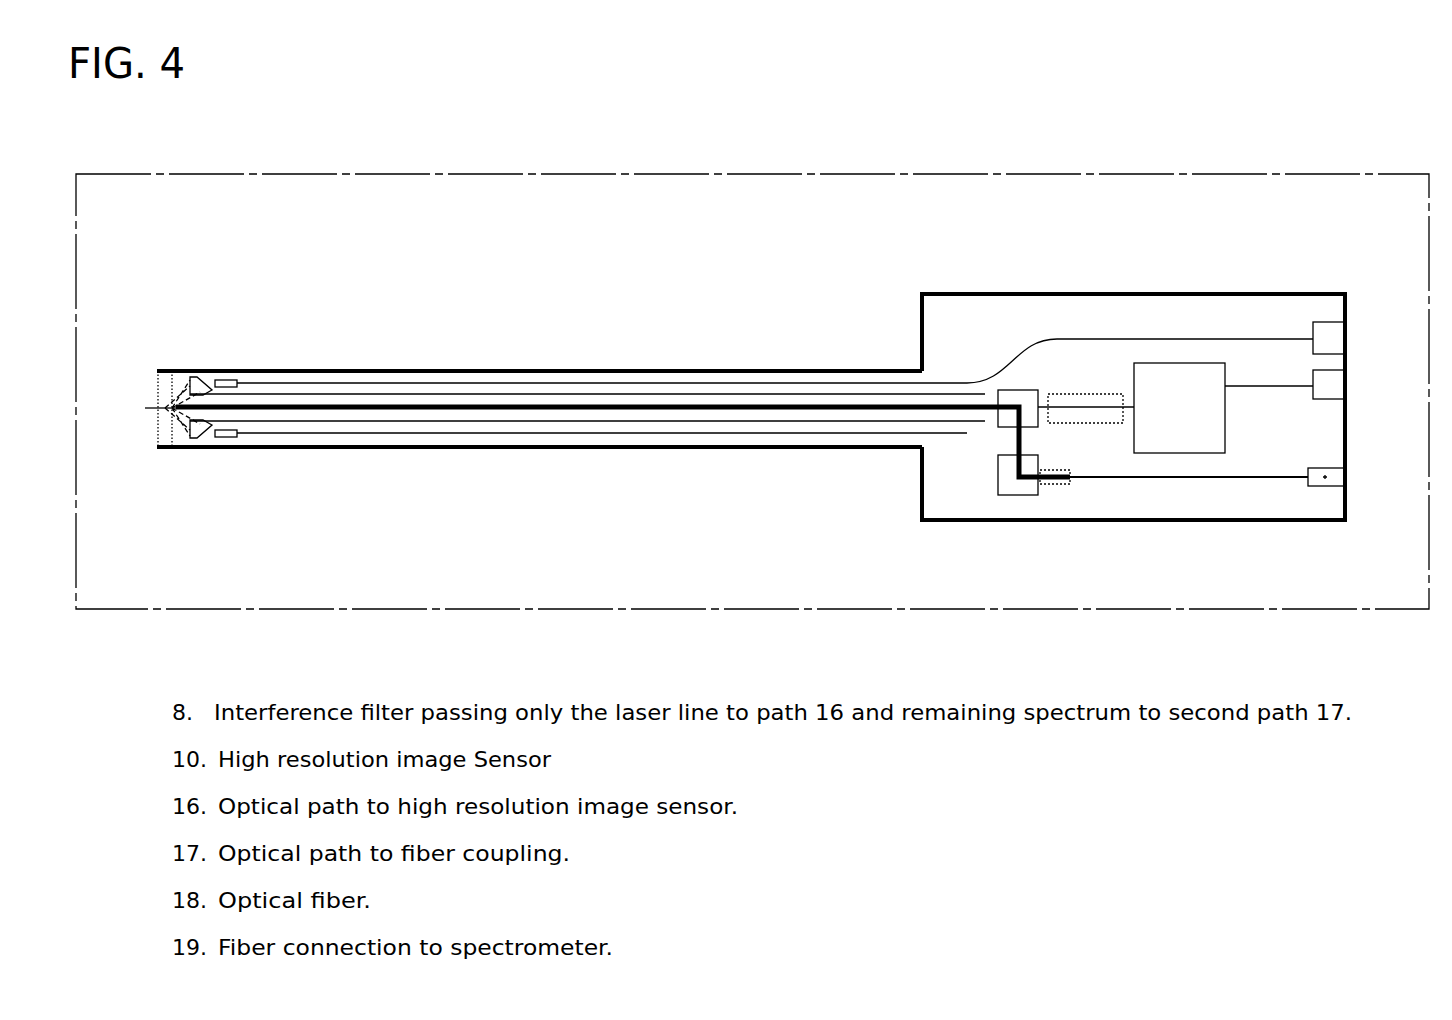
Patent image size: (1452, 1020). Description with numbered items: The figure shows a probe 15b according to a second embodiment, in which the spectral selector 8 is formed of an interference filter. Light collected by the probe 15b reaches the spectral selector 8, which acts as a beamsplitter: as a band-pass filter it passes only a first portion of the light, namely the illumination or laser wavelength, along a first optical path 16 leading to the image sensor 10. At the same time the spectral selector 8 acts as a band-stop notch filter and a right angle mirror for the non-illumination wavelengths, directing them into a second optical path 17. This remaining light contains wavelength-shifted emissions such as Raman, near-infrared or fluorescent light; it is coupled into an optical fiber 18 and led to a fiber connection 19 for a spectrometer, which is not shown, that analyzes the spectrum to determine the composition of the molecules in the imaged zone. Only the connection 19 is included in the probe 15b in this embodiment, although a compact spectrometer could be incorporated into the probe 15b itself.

The probe 15b is at (725, 174).
The spectral selector 8 is at (1022, 388).
The image sensor 10 is at (1187, 362).
The first optical path 16 is at (1078, 406).
The second optical path 17 is at (1010, 445).
The optical fiber 18 is at (1140, 482).
The fiber connection 19 is at (1348, 480).